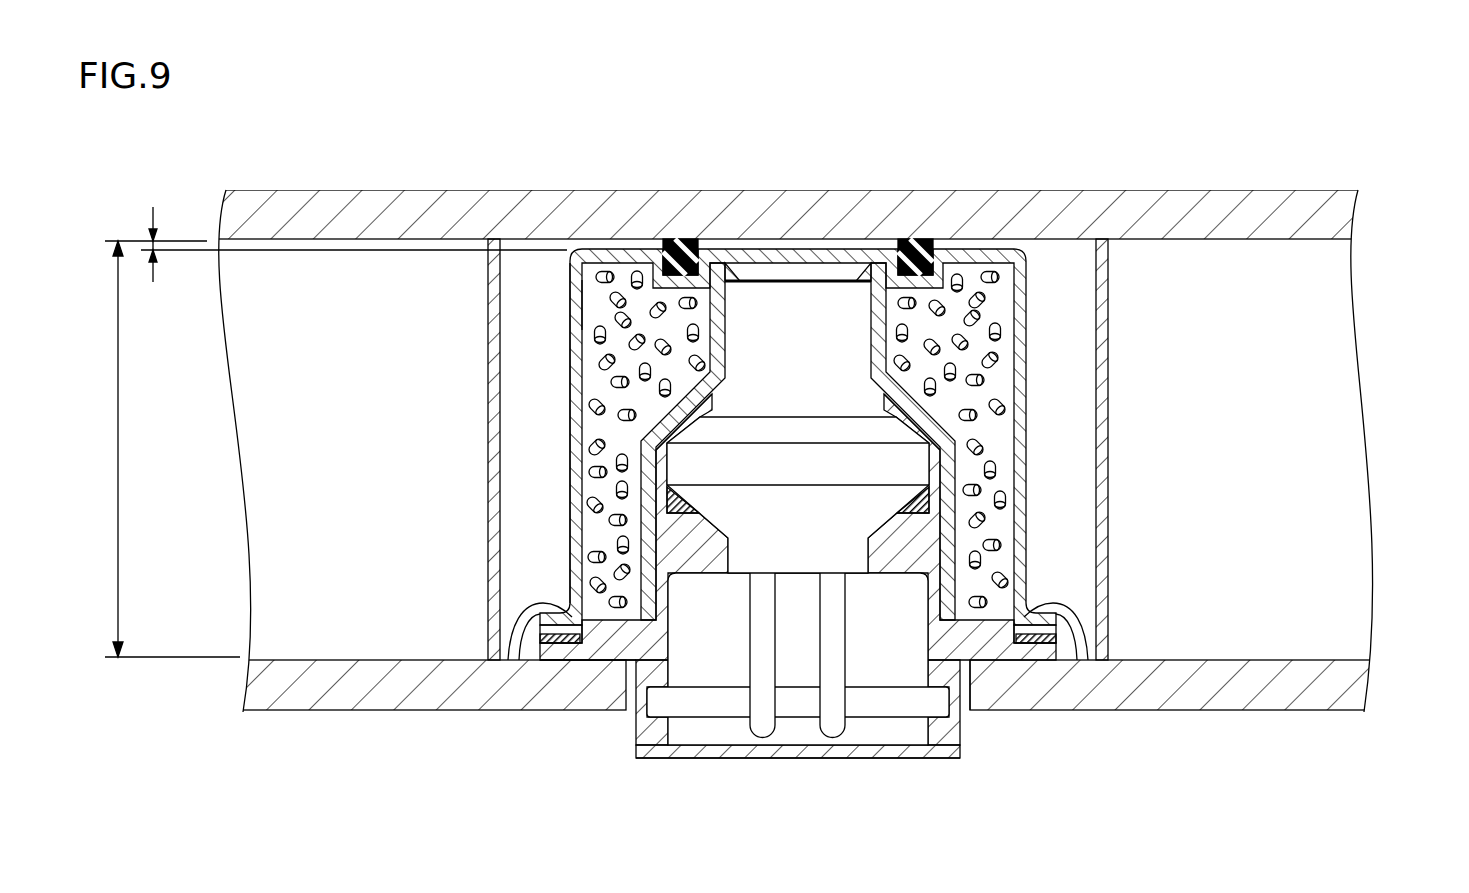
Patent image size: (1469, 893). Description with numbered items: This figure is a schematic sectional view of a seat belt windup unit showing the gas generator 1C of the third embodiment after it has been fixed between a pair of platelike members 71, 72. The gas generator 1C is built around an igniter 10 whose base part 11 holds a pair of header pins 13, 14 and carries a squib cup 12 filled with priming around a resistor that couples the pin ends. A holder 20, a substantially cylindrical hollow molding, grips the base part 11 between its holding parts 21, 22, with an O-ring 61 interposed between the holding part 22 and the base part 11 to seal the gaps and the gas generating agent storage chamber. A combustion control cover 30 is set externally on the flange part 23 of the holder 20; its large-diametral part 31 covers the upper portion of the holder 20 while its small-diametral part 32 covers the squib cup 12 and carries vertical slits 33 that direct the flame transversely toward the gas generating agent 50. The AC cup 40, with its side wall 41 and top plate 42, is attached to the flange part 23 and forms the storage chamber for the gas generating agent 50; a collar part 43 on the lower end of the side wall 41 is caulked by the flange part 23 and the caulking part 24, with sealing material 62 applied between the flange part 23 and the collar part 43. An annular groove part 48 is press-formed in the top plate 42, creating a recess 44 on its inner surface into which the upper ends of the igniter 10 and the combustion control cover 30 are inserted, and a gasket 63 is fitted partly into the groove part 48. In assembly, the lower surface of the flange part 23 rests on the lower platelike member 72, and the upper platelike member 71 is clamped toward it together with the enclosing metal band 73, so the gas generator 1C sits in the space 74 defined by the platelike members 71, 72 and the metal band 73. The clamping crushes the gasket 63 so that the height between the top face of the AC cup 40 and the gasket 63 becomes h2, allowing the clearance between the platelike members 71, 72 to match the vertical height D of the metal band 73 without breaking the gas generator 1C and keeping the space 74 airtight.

The gas generator 1C is at (953, 779).
The igniter 10 is at (745, 595).
The base part 11 is at (910, 457).
The squib cup 12 is at (768, 298).
The header pin 13 is at (763, 722).
The header pin 14 is at (833, 722).
The holder 20 is at (984, 672).
The holding part 21 is at (686, 543).
The holding part 22 is at (630, 413).
The flange part 23 is at (580, 652).
The caulking part 24 is at (508, 660).
The combustion control cover 30 is at (954, 403).
The large-diametral part 31 is at (923, 612).
The small-diametral part 32 is at (873, 387).
The slit 33 is at (880, 328).
The AC cup 40 is at (557, 372).
The side wall 41 is at (568, 303).
The top plate 42 is at (603, 257).
The collar part 43 is at (552, 632).
The recess 44 is at (725, 263).
The groove part 48 is at (913, 270).
The gas generating agent 50 is at (638, 277).
The O-ring 61 is at (920, 507).
The sealing material 62 is at (1045, 645).
The gasket 63 is at (682, 258).
The platelike member 71 is at (1237, 215).
The platelike member 72 is at (1156, 690).
The metal band 73 is at (1108, 322).
The space 74 is at (517, 373).
The vertical height of metal band D is at (164, 449).
The height after clamping h2 is at (354, 242).